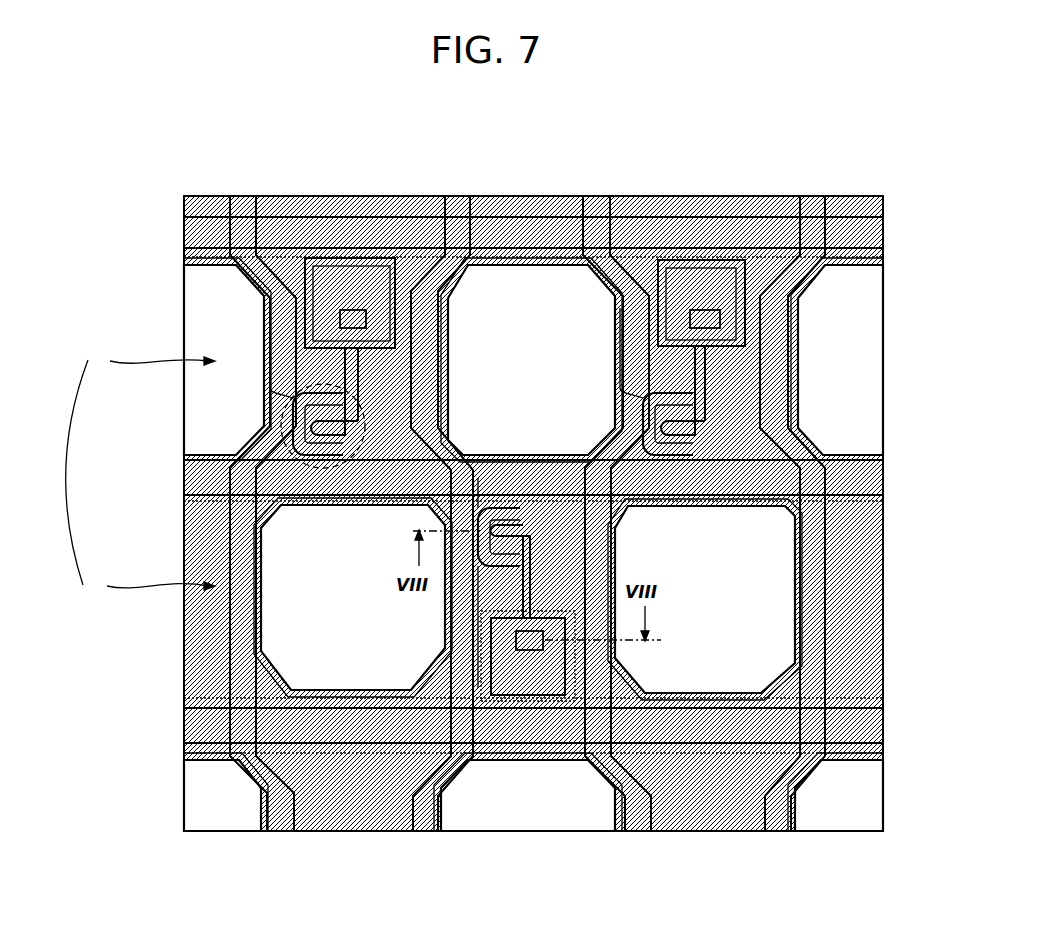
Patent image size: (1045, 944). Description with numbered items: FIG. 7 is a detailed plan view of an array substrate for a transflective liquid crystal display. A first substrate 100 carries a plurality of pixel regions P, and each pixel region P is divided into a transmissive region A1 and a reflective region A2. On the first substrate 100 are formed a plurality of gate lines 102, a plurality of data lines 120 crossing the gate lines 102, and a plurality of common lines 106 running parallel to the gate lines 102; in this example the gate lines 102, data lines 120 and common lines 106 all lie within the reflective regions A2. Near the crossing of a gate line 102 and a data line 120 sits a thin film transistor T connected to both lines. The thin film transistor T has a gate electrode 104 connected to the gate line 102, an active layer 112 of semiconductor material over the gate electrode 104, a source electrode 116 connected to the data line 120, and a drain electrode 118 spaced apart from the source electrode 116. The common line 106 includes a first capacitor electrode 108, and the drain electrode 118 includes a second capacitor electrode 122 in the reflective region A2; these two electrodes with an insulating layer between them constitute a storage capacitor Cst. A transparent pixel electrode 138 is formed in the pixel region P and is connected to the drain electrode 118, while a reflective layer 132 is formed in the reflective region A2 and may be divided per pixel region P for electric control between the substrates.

The first substrate 100 is at (339, 188).
The gate line 102 is at (882, 455).
The gate electrode 104 is at (338, 415).
The common line 106 is at (882, 209).
The first capacitor electrode 108 is at (390, 286).
The active layer 112 is at (333, 437).
The source electrode 116 is at (303, 450).
The drain electrode 118 is at (351, 377).
The data line 120 is at (222, 186).
The second capacitor electrode 122 is at (383, 313).
The reflective layer 132 is at (837, 267).
The transparent pixel electrode 138 is at (497, 252).
The thin film transistor T is at (330, 452).
The storage capacitor Cst is at (720, 340).
The transmissive region A1 is at (152, 361).
The reflective region A2 is at (151, 586).
The pixel region P is at (65, 472).